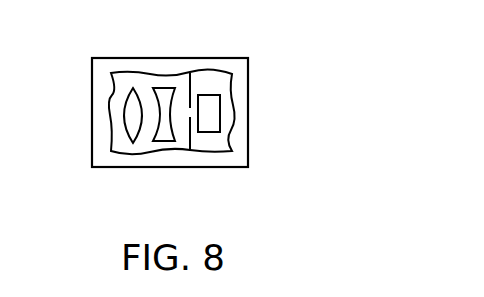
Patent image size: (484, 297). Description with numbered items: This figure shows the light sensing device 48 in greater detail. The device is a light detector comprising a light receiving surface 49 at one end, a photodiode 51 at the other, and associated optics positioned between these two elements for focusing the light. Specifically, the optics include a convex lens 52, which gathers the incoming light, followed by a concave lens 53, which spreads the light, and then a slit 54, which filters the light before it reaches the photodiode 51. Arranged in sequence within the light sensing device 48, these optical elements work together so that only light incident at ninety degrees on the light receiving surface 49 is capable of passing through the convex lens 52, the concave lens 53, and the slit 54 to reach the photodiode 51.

The light sensing device 48 is at (213, 57).
The light receiving surface 49 is at (91, 130).
The photodiode 51 is at (220, 110).
The convex lens 52 is at (131, 143).
The concave lens 53 is at (166, 138).
The slit 54 is at (192, 134).